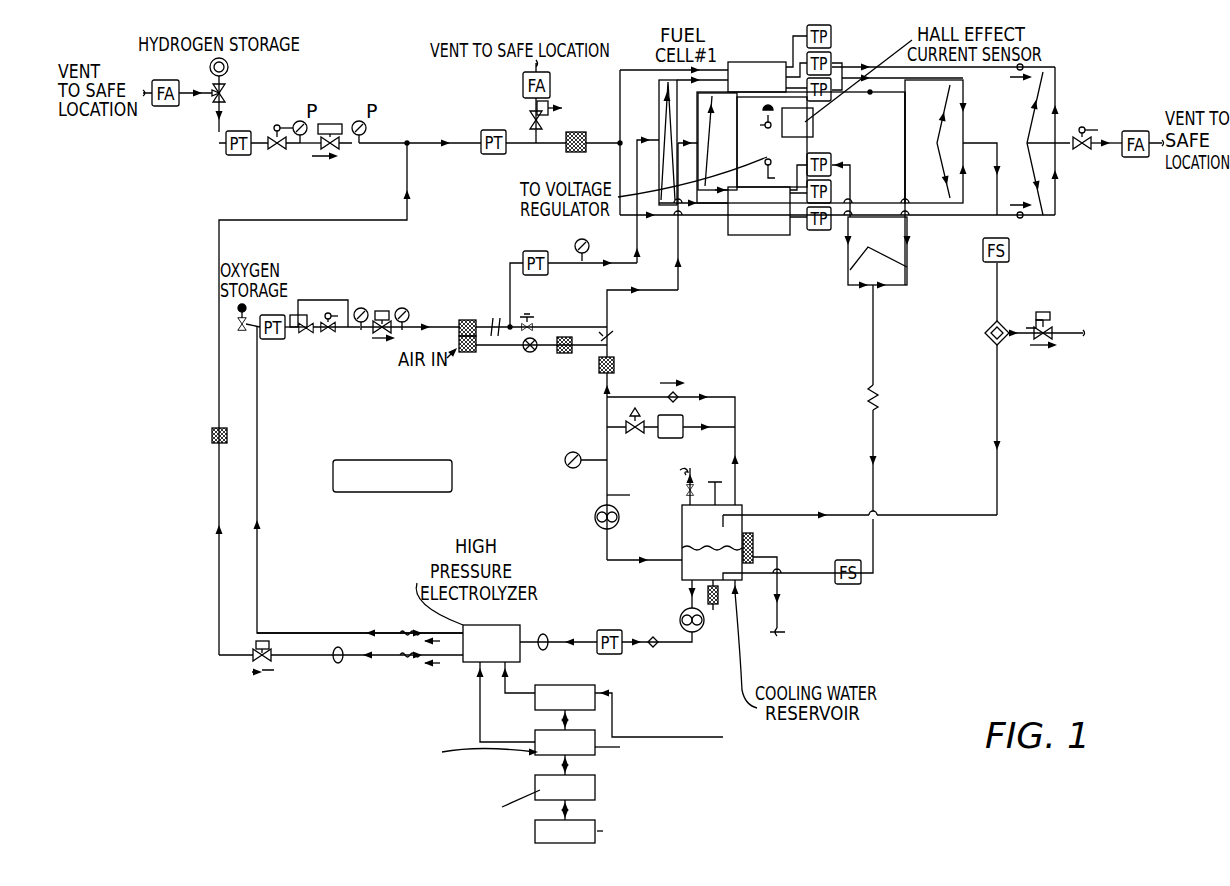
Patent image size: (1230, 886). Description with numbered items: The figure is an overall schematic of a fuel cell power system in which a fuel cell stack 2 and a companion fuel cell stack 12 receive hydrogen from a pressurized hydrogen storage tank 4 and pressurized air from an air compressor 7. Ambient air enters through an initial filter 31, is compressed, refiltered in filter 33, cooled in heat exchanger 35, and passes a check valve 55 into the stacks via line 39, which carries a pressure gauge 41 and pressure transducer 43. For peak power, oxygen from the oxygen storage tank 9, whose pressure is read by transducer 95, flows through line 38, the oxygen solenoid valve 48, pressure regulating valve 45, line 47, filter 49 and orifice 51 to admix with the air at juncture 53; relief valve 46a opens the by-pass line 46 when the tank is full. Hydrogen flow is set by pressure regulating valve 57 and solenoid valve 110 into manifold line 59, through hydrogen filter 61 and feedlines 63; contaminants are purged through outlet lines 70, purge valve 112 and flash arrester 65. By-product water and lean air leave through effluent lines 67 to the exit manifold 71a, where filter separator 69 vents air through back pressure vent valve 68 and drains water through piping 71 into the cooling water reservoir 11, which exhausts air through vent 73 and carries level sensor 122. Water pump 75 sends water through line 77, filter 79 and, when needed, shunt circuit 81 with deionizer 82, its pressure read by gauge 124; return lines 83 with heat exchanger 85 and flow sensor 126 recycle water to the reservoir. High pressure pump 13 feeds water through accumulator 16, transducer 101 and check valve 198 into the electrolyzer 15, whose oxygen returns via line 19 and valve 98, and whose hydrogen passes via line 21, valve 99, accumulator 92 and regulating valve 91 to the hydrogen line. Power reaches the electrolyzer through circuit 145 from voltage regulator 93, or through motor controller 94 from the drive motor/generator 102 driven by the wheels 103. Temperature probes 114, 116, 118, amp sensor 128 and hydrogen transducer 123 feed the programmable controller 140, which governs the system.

The fuel cell stack 2 is at (762, 237).
The hydrogen gas storage tank 4 is at (232, 72).
The air compressor 7 is at (527, 354).
The oxygen storage tank 9 is at (235, 318).
The cooling water reservoir 11 is at (739, 515).
The fuel cell #1 12 is at (722, 44).
The high pressure pump 13 is at (700, 634).
The electrolyzer 15 is at (521, 624).
The accumulator 16 is at (548, 637).
The oxygen pressure line 19 is at (293, 633).
The hydrogen line 21 is at (298, 660).
The initial air filter 31 is at (466, 354).
The filter 33 is at (562, 355).
The heat exchanger 35 is at (620, 342).
The oxygen line 38 is at (297, 315).
The air inlet line 39 is at (676, 126).
The pressure gauge 41 is at (572, 246).
The pressure transducer 43 is at (548, 275).
The pressure regulating valve 45 is at (383, 311).
The pressure relief by-pass line 46 is at (318, 298).
The pressure relief valve 46a is at (305, 337).
The oxygen line 47 is at (412, 334).
The oxygen solenoid valve 48 is at (330, 338).
The oxygen filter 49 is at (466, 318).
The flow controlling orifice 51 is at (500, 316).
The juncture 53 is at (512, 320).
The check valve 55 is at (545, 322).
The pressure regulating valve 57 is at (330, 124).
The hydrogen manifold line 59 is at (422, 140).
The hydrogen filter 61 is at (578, 132).
The hydrogen feedlines 63 is at (617, 84).
The flash arrester 65 is at (1128, 131).
The air effluent lines 67 is at (937, 143).
The back pressure regulating vent valve 68 is at (1050, 316).
The filter separator 69 is at (990, 326).
The hydrogen outlet lines 70 is at (1027, 143).
The drain piping 71 is at (1000, 490).
The exit manifold 71a is at (990, 203).
The check valved vent 73 is at (688, 496).
The water pump 75 is at (592, 520).
The water line 77 is at (672, 300).
The water filter 79 is at (617, 367).
The shunt circuit 81 is at (697, 426).
The deionizer 82 is at (682, 436).
The water return lines 83 is at (874, 248).
The air/water cooling heat exchanger 85 is at (880, 404).
The pressure regulating valve 91 is at (262, 672).
The hydrogen accumulator 92 is at (336, 664).
The voltage regulator 93 is at (590, 684).
The motor controller 94 is at (598, 778).
The pressure transducer 95 is at (265, 340).
The flow control valve 98 is at (400, 628).
The flow control valve 99 is at (402, 664).
The pressure transducer 101 is at (650, 633).
The drive motor/generator 102 is at (600, 790).
The vehicle wheels 103 is at (530, 835).
The hydrogen solenoid valve 110 is at (278, 152).
The hydrogen purge solenoid valve 112 is at (1080, 128).
The temperature probe 114 is at (833, 195).
The temperature probe 116 is at (832, 36).
The temperature probe 118 is at (830, 133).
The water level sensor 122 is at (755, 542).
The pressure transducer 123 is at (222, 150).
The pressure gauge 124 is at (562, 458).
The flow sensor 126 is at (1010, 248).
The fuel cell stack amp sensor 128 is at (775, 140).
The programmable controller 140 is at (395, 459).
The circuit 145 is at (512, 680).
The check valve 198 is at (660, 630).